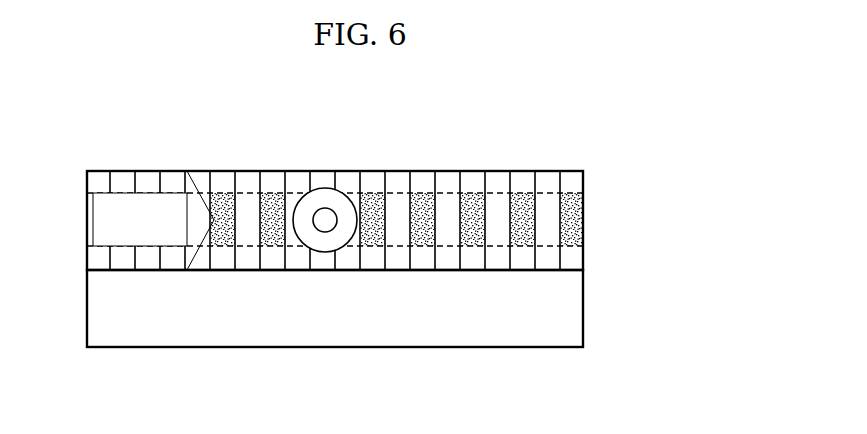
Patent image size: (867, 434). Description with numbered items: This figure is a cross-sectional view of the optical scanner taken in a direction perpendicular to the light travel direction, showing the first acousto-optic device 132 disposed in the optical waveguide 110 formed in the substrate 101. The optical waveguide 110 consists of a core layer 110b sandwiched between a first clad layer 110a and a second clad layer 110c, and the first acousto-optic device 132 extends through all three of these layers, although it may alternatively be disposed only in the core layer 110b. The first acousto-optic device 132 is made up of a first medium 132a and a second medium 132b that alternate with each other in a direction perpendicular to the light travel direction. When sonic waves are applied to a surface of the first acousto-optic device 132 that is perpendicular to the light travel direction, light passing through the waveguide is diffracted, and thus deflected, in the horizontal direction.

The substrate 101 is at (336, 340).
The optical waveguide 110 is at (412, 185).
The first clad layer 110a is at (583, 259).
The core layer 110b is at (583, 220).
The second clad layer 110c is at (583, 186).
The first acousto-optic device 132 is at (375, 200).
The first medium 132a is at (248, 203).
The second medium 132b is at (277, 203).